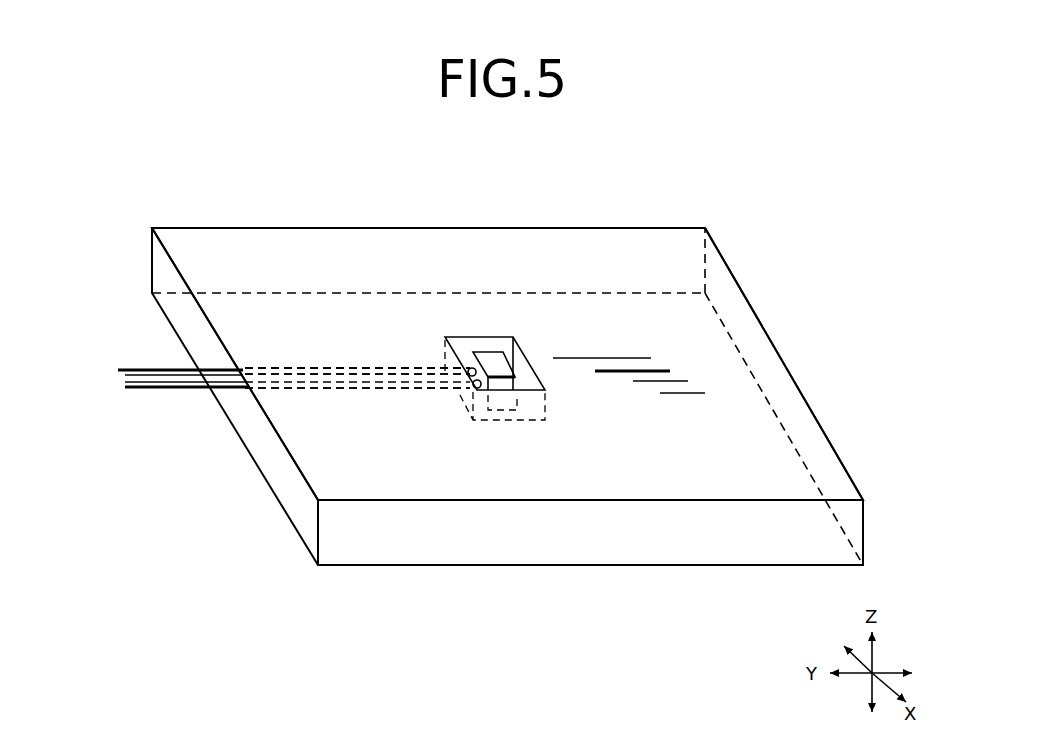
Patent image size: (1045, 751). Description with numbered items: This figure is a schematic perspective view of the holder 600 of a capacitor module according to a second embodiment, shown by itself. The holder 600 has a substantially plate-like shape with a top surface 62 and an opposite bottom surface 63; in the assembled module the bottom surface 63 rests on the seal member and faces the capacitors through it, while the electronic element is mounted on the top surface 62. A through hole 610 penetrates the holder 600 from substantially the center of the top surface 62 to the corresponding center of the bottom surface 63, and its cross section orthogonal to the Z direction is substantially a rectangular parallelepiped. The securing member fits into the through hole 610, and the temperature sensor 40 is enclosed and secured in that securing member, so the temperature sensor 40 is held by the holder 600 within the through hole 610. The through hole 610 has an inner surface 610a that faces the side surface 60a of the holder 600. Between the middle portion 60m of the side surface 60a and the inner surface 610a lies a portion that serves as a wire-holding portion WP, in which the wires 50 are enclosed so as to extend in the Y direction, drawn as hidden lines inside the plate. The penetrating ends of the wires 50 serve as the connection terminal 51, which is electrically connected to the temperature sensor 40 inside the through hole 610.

The holder 600 is at (722, 350).
The top surface 62 is at (818, 455).
The bottom surface 63 is at (820, 557).
The side surface 60a is at (283, 480).
The middle portion 60m is at (218, 365).
The wires 50 is at (300, 357).
The wire-holding portion WP is at (278, 392).
The through hole 610 is at (512, 337).
The inner surface 610a is at (470, 368).
The connection terminal 51 is at (477, 380).
The temperature sensor 40 is at (490, 337).